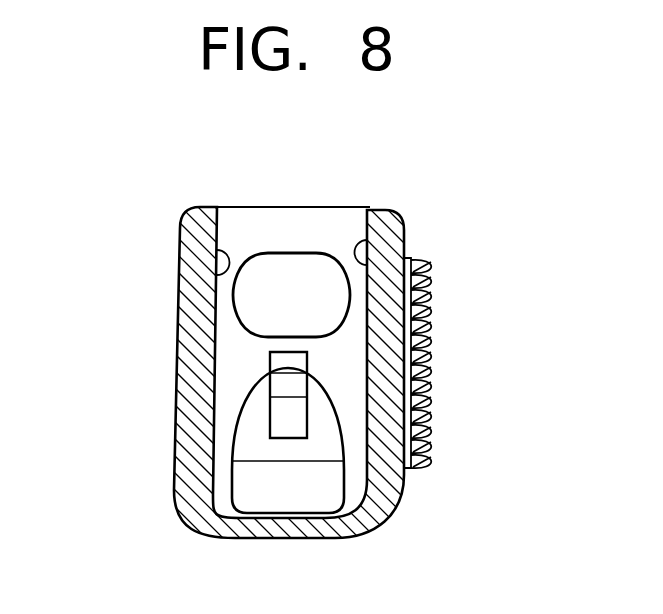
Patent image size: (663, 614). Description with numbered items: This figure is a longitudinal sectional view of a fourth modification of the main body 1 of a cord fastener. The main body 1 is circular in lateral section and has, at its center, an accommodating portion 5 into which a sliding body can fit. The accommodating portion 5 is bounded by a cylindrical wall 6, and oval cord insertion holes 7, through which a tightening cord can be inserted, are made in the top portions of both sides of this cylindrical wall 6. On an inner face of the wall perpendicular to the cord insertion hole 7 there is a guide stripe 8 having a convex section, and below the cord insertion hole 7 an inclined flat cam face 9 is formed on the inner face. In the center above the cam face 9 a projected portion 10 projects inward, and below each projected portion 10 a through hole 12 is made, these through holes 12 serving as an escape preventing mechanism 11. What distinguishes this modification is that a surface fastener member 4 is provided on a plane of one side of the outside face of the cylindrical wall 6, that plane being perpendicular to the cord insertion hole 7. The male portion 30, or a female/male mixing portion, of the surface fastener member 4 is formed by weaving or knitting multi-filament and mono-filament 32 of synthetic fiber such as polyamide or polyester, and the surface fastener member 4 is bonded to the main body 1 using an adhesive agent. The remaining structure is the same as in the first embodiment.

The main body 1 is at (310, 200).
The surface fastener member 4 is at (448, 322).
The accommodating portion 5 is at (258, 247).
The cylindrical wall 6 is at (205, 330).
The cord insertion hole 7 is at (292, 280).
The guide stripe 8 is at (224, 254).
The cam face 9 is at (285, 480).
The projected portion 10 is at (285, 382).
The escape preventing mechanism 11 is at (318, 427).
The through hole 12 is at (285, 413).
The male portion 30 is at (412, 375).
The mono-filament 32 is at (416, 448).